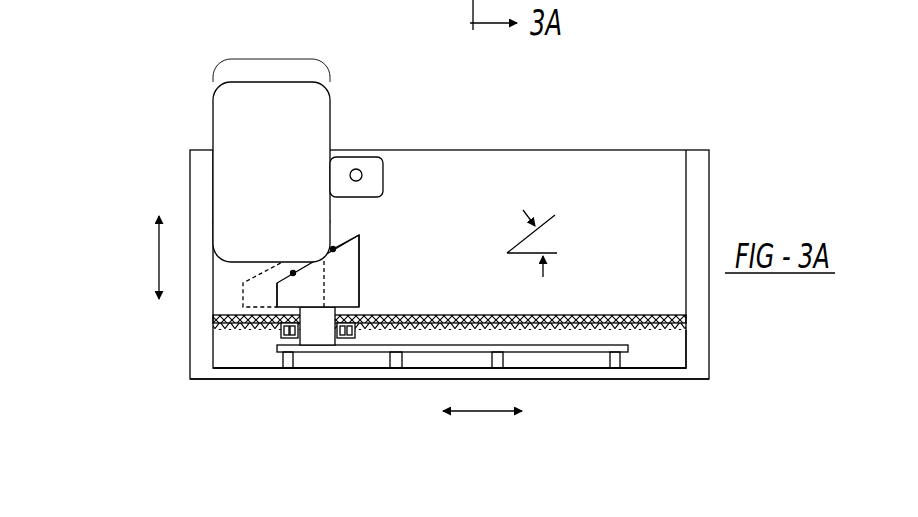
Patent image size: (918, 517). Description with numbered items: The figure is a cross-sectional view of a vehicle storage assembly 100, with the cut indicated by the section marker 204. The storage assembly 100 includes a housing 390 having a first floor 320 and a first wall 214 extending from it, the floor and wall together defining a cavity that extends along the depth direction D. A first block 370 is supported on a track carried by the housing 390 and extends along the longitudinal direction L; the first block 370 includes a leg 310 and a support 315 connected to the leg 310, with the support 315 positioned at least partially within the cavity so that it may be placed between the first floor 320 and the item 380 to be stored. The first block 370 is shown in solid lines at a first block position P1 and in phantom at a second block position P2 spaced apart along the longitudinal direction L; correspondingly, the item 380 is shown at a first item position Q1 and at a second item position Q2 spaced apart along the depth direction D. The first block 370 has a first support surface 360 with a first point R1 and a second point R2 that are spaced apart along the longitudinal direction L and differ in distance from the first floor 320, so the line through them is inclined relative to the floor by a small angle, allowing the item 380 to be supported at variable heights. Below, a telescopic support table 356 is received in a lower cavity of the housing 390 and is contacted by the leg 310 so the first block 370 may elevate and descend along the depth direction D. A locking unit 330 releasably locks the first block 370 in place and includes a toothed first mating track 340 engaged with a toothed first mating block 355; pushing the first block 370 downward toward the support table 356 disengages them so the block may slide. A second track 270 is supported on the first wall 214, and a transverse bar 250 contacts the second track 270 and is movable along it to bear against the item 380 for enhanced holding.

The vehicle storage assembly 100 is at (411, 230).
The section line 204 is at (686, 6).
The first wall 214 is at (693, 163).
The transverse bar 250 is at (400, 142).
The second track 270 is at (357, 169).
The leg 310 is at (326, 327).
The support 315 is at (306, 299).
The first floor 320 is at (635, 307).
The locking unit 330 is at (418, 385).
The first mating track 340 is at (663, 338).
The first mating block 355 is at (365, 337).
The support table 356 is at (577, 348).
The first support surface 360 is at (348, 233).
The first block 370 is at (370, 253).
The item 380 is at (240, 132).
The housing 390 is at (255, 380).
The first block position P1 is at (285, 304).
The second block position P2 is at (233, 305).
The first item position Q1 is at (210, 88).
The second item position Q2 is at (235, 52).
The first point R1 is at (301, 286).
The second point R2 is at (339, 261).
The depth direction D is at (149, 257).
The longitudinal direction L is at (482, 424).